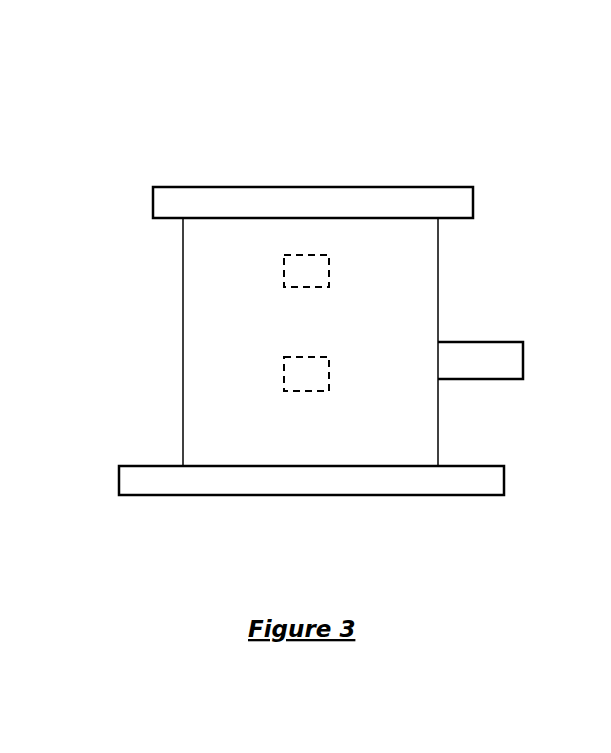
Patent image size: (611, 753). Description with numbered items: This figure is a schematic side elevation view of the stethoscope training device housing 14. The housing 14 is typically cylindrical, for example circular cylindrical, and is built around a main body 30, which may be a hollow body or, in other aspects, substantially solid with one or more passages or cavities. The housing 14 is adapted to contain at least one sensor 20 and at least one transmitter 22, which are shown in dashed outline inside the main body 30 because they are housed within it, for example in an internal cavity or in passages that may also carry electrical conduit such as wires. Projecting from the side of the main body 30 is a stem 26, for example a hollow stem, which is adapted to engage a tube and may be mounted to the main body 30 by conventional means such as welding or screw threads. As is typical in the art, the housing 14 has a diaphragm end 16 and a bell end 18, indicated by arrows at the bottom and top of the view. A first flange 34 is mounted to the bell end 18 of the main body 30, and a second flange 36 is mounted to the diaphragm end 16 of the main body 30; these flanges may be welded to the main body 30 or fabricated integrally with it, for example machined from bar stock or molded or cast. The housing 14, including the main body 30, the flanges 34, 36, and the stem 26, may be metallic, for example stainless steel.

The stethoscope training device housing 14 is at (387, 130).
The diaphragm end 16 is at (231, 527).
The bell end 18 is at (238, 145).
The sensor 20 is at (284, 272).
The transmitter 22 is at (329, 382).
The stem 26 is at (498, 342).
The main body 30 is at (183, 303).
The first flange 34 is at (474, 202).
The second flange 36 is at (504, 483).